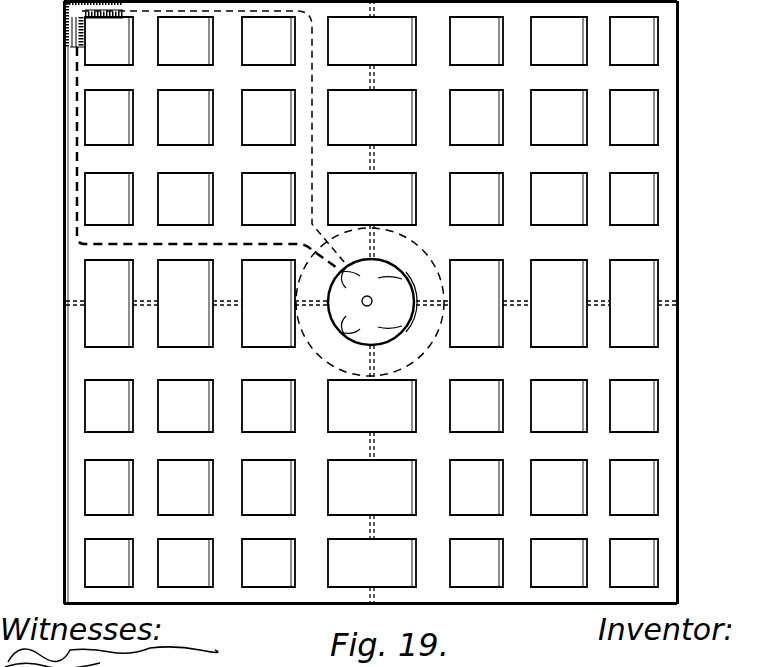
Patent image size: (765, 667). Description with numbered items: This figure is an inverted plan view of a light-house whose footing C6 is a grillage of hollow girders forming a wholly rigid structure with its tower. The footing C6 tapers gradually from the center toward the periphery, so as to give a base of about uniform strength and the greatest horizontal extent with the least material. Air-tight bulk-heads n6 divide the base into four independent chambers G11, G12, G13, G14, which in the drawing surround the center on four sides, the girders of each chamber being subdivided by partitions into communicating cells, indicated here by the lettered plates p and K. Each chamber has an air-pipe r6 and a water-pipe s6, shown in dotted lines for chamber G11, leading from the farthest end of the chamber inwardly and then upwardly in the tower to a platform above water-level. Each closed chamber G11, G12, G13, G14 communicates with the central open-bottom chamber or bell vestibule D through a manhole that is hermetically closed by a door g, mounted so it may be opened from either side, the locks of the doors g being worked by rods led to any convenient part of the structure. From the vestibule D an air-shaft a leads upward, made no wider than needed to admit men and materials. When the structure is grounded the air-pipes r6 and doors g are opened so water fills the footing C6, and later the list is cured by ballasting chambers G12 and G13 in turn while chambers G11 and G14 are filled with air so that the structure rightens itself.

The independent chamber G11 is at (73, 10).
The independent chamber G12 is at (667, 156).
The independent chamber G13 is at (665, 517).
The independent chamber G14 is at (73, 519).
The water-pipe s6 is at (73, 35).
The air-pipe r6 is at (98, 24).
The air-tight bulk-heads n6 is at (371, 14).
The plates p is at (371, 302).
The plates K is at (643, 335).
The footing C6 is at (370, 384).
The bell vestibule D is at (372, 302).
The air-shaft a is at (376, 298).
The door g is at (371, 302).